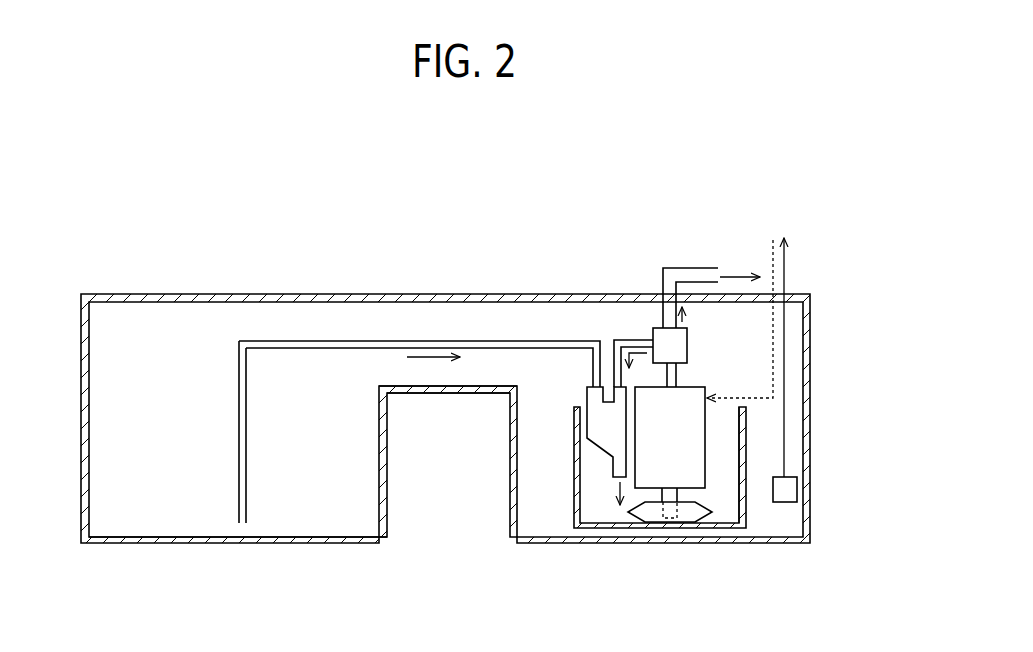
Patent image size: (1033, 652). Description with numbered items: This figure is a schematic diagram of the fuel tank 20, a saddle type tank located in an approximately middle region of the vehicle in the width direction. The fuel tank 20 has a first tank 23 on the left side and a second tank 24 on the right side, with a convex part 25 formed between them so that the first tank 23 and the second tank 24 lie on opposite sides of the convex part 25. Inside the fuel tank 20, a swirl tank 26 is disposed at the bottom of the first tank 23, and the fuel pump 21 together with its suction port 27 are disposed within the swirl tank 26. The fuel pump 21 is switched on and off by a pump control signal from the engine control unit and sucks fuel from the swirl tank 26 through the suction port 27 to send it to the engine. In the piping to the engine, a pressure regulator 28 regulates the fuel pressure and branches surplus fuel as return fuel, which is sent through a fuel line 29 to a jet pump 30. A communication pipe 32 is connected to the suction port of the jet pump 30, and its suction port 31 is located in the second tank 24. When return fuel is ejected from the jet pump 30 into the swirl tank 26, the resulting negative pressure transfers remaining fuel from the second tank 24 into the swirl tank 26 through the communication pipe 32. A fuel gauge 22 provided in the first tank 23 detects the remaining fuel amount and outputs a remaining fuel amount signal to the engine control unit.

The fuel tank 20 is at (815, 304).
The fuel pump 21 is at (705, 433).
The fuel gauge 22 is at (797, 490).
The first tank 23 is at (713, 547).
The second tank 24 is at (200, 546).
The convex part 25 is at (487, 387).
The swirl tank 26 is at (738, 460).
The suction port 27 is at (665, 525).
The pressure regulator 28 is at (680, 348).
The fuel line 29 is at (622, 340).
The jet pump 30 is at (613, 442).
The suction port 31 is at (243, 526).
The communication pipe 32 is at (480, 340).